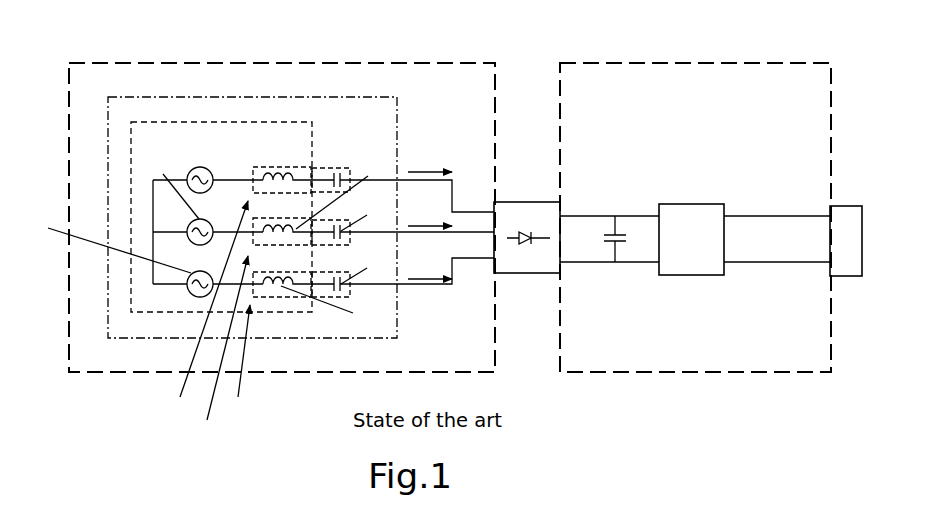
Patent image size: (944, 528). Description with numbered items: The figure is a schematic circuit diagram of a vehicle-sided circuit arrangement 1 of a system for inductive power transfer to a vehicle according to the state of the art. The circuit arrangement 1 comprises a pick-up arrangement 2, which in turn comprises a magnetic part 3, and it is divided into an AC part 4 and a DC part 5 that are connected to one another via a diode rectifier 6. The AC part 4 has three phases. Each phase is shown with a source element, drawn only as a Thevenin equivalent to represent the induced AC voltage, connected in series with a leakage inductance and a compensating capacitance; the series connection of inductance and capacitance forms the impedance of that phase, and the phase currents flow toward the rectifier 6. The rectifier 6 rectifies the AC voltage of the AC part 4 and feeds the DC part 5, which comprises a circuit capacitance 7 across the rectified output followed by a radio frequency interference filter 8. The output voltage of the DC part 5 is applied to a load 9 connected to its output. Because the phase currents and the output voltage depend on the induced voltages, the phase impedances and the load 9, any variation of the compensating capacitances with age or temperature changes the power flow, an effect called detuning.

The circuit arrangement 1 is at (446, 241).
The pick-up arrangement 2 is at (362, 97).
The magnetic part 3 is at (240, 122).
The AC part 4 is at (476, 63).
The DC part 5 is at (684, 63).
The diode rectifier 6 is at (520, 202).
The circuit capacitance 7 is at (612, 244).
The radio frequency interference filter 8 is at (688, 276).
The load 9 is at (850, 206).